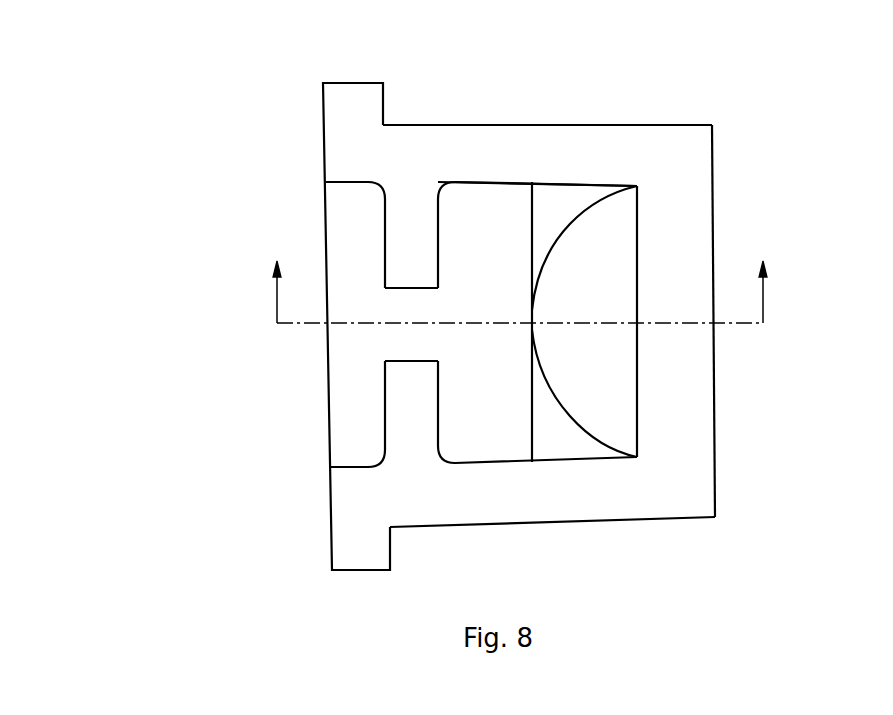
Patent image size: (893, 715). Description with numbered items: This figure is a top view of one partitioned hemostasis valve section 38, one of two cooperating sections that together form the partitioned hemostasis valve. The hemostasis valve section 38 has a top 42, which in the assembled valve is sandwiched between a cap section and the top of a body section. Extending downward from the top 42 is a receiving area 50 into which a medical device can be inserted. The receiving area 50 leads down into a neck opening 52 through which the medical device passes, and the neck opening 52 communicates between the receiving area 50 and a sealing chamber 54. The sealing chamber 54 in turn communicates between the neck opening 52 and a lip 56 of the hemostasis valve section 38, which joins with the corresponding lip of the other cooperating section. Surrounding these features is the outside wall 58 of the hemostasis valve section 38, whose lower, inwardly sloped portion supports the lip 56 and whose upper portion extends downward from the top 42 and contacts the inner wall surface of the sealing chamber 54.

The hemostasis valve section 38 is at (428, 290).
The top 42 is at (331, 535).
The receiving area 50 is at (353, 408).
The neck opening 52 is at (407, 313).
The sealing chamber 54 is at (497, 232).
The lip 56 is at (680, 425).
The outside wall 58 is at (487, 125).